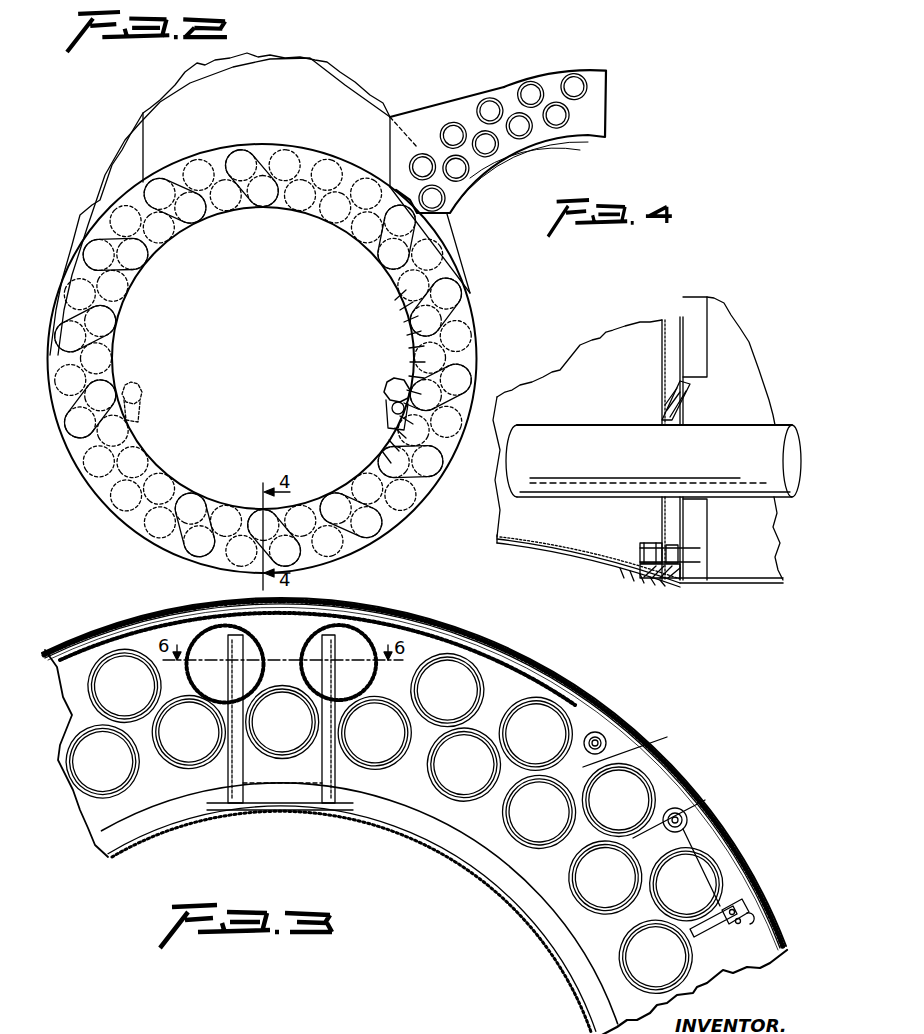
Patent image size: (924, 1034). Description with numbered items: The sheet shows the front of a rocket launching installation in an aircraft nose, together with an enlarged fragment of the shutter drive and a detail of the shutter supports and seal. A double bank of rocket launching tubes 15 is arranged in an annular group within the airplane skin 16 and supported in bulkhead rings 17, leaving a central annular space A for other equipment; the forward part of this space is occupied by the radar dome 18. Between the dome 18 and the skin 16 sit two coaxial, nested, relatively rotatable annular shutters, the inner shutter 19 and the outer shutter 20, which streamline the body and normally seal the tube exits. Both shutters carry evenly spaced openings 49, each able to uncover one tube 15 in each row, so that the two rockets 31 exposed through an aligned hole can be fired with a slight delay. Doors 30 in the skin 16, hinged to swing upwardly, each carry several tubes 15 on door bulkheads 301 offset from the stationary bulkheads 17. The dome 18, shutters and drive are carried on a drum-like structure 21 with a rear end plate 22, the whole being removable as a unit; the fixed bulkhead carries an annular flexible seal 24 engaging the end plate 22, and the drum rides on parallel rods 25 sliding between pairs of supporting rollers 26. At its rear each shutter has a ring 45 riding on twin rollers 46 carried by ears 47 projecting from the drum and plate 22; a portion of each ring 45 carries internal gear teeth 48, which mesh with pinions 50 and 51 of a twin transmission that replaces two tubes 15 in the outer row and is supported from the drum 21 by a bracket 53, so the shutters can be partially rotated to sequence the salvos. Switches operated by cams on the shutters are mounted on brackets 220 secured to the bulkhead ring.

In FIG. 2, the rocket launching tubes 15 is at (155, 512).
In FIG. 4, the rocket launching tubes 15 is at (598, 495).
In FIG. 3, the rocket launching tubes 15 is at (620, 960).
In FIG. 4, the airplane skin 16 is at (742, 583).
In FIG. 4, the bulkhead rings 17 is at (685, 516).
In FIG. 2, the radar dome 18 is at (273, 312).
In FIG. 4, the inner shutter 19 is at (548, 562).
In FIG. 3, the inner shutter 19 is at (293, 610).
In FIG. 2, the outer shutter 20 is at (293, 165).
In FIG. 4, the outer shutter 20 is at (575, 570).
In FIG. 3, the outer shutter 20 is at (130, 622).
In FIG. 3, the drum-like structure 21 is at (263, 812).
In FIG. 4, the rear end plate 22 is at (660, 388).
In FIG. 3, the rear end plate 22 is at (433, 817).
In FIG. 4, the annular flexible seal 24 is at (685, 412).
In FIG. 2, the parallel rods 25 is at (387, 412).
In FIG. 2, the supporting rollers 26 is at (386, 390).
In FIG. 2, the doors 30 is at (103, 200).
In FIG. 2, the rockets 31 is at (573, 77).
In FIG. 3, the rockets 31 is at (540, 830).
In FIG. 4, the ring 45 is at (665, 583).
In FIG. 3, the ring 45 is at (617, 732).
In FIG. 4, the twin rollers 46 is at (658, 546).
In FIG. 3, the twin rollers 46 is at (680, 808).
In FIG. 4, the ears 47 is at (660, 512).
In FIG. 3, the ears 47 is at (634, 743).
In FIG. 3, the internal gear teeth 48 is at (183, 613).
In FIG. 2, the openings 49 is at (163, 193).
In FIG. 4, the openings 49 is at (500, 542).
In FIG. 3, the pinion 50 is at (220, 637).
In FIG. 3, the pinion 51 is at (350, 637).
In FIG. 3, the bracket 53 is at (327, 780).
In FIG. 3, the brackets 220 is at (717, 927).
In FIG. 2, the door bulkheads 301 is at (503, 153).
In FIG. 4, the annular space A is at (687, 347).
In FIG. 3, the annular space A is at (451, 897).